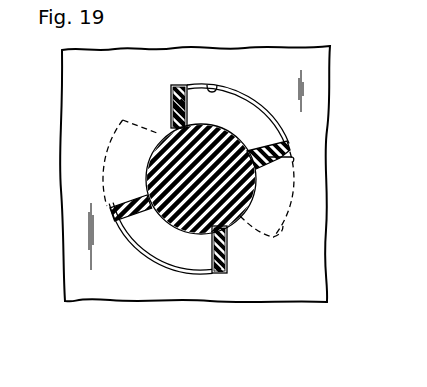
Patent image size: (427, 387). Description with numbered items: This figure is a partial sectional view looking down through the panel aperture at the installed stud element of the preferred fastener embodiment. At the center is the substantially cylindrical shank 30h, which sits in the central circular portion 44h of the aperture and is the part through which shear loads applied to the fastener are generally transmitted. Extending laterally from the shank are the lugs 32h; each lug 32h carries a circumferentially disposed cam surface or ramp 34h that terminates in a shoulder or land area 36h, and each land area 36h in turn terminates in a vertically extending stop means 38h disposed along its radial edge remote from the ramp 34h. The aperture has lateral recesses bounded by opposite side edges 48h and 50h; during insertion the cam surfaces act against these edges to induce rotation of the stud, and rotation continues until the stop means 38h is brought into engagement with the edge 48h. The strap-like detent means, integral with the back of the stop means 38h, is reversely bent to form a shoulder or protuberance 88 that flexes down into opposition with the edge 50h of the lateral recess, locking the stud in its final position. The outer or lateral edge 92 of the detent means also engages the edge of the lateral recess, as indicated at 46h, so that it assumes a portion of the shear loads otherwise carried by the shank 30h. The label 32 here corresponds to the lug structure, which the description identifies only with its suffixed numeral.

The shank 30h is at (233, 213).
The lug 32h is at (278, 226).
The land area 36h is at (273, 193).
The stop means 38h is at (112, 217).
The central circular portion 44h is at (163, 137).
The engagement location 46h is at (213, 84).
The lateral recess panel edge 48h is at (292, 157).
The lateral recess panel edge 50h is at (177, 92).
The shoulder 88 is at (183, 110).
The lateral edge of detent means 92 is at (240, 92).
The cam surface 34h is at (426, 18).
The adjacent element 32 is at (418, 87).